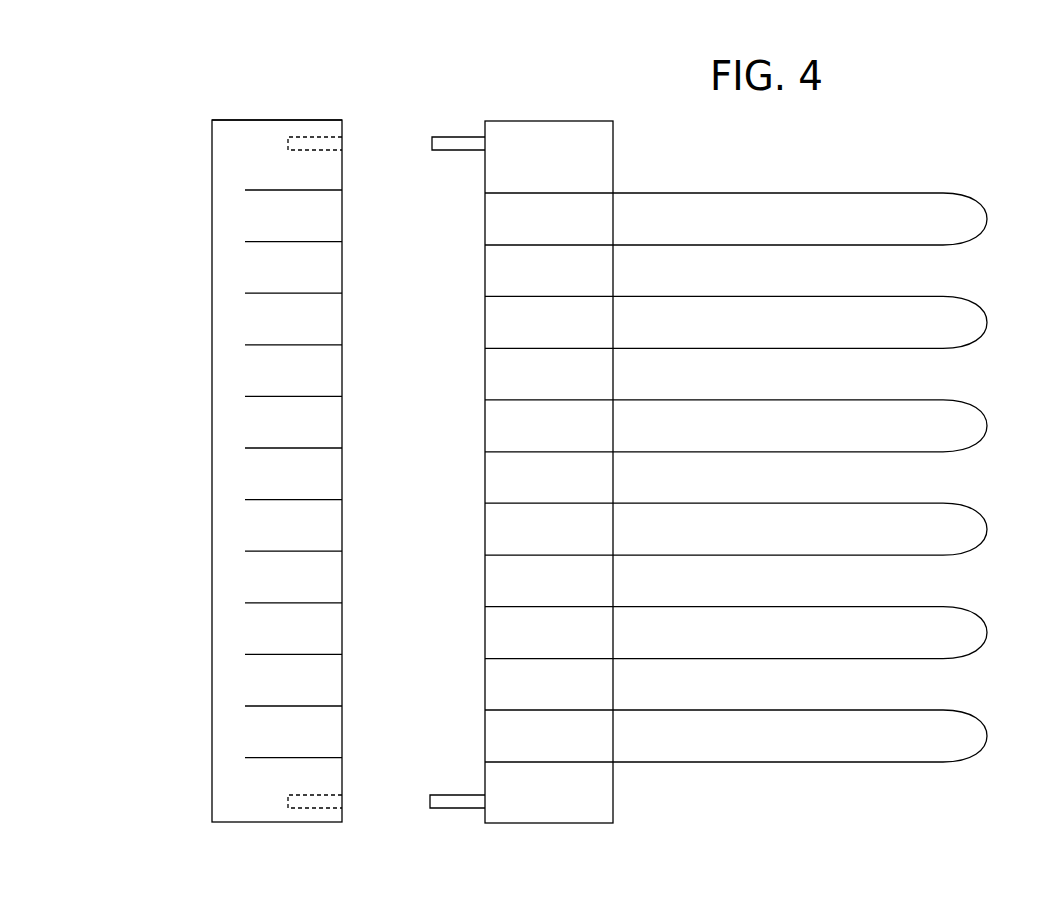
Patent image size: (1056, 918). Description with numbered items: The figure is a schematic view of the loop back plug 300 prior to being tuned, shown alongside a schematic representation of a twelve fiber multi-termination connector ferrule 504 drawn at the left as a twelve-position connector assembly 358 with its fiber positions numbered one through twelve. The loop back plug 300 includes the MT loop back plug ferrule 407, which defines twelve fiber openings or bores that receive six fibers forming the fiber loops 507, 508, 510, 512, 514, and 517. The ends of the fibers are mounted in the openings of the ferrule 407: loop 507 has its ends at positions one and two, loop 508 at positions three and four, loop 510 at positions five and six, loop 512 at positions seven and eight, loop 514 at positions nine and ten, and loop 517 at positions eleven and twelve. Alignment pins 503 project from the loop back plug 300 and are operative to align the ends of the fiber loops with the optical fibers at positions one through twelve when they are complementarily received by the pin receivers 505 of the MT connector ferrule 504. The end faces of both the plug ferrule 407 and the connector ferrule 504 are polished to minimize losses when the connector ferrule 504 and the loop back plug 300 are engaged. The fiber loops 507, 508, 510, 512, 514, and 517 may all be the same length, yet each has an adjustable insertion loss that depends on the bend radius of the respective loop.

The loop back plug 300 is at (737, 454).
The terminal block 358 is at (227, 473).
The MT loop back plug ferrule 407 is at (534, 120).
The alignment pins 503 is at (455, 136).
The MT connector ferrule 504 is at (261, 120).
The pin receivers 505 is at (305, 137).
The fiber loop 507 is at (975, 203).
The fiber loop 508 is at (975, 307).
The fiber loop 510 is at (975, 410).
The fiber loop 512 is at (975, 514).
The fiber loop 514 is at (975, 617).
The fiber loop 517 is at (975, 722).